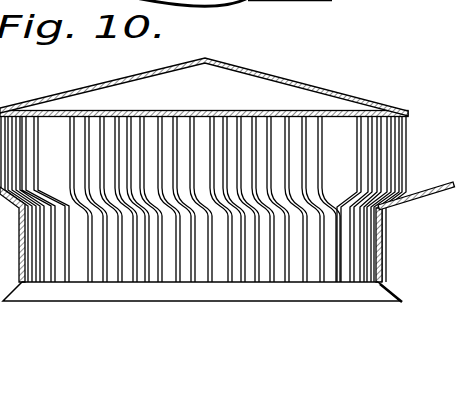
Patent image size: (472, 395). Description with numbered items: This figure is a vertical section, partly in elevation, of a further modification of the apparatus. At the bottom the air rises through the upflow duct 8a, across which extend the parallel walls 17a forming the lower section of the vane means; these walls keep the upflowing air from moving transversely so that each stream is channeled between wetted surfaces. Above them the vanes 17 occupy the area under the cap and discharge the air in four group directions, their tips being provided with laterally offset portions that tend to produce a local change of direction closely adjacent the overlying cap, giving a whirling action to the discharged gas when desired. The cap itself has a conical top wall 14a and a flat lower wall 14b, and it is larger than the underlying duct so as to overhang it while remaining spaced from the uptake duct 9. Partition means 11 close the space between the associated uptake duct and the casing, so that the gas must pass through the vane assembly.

The conical top wall 14a is at (283, 80).
The flat lower wall 14b is at (312, 113).
The uptake duct 9 is at (429, 129).
The parallel walls 17a is at (409, 157).
The partition means 11 is at (416, 197).
The vanes 17 is at (322, 252).
The upflow duct 8a is at (382, 272).